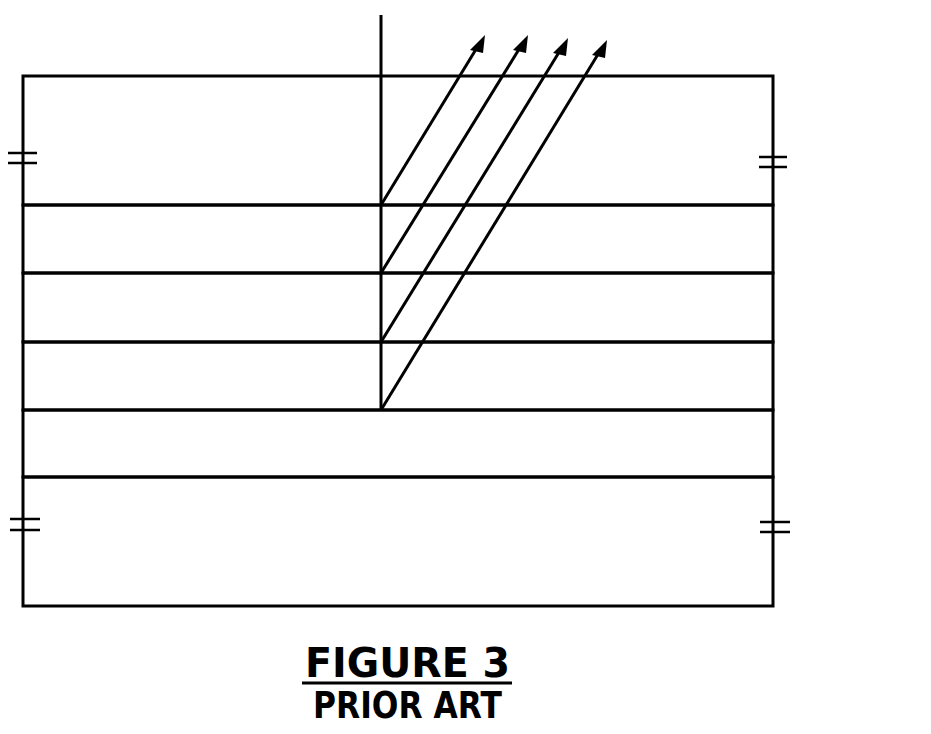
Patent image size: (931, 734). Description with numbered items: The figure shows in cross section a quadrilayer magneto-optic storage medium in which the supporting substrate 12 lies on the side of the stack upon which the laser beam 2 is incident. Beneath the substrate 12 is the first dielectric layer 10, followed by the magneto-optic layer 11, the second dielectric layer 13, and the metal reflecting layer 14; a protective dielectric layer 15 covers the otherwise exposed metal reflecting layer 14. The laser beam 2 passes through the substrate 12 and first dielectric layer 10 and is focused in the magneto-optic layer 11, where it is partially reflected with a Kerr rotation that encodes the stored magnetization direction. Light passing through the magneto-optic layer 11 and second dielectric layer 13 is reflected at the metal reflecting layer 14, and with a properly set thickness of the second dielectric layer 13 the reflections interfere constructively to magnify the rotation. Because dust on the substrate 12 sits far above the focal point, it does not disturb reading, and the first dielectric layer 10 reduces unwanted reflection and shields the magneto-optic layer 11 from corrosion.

The laser beam 2 is at (494, 211).
The first dielectric layer 10 is at (775, 254).
The magneto-optic layer 11 is at (775, 313).
The substrate 12 is at (775, 128).
The second dielectric layer 13 is at (775, 389).
The metal reflecting layer 14 is at (775, 465).
The dielectric layer 15 is at (775, 566).